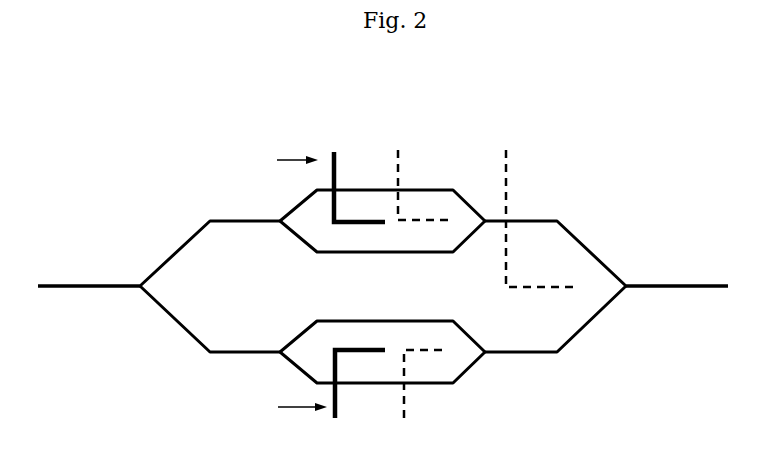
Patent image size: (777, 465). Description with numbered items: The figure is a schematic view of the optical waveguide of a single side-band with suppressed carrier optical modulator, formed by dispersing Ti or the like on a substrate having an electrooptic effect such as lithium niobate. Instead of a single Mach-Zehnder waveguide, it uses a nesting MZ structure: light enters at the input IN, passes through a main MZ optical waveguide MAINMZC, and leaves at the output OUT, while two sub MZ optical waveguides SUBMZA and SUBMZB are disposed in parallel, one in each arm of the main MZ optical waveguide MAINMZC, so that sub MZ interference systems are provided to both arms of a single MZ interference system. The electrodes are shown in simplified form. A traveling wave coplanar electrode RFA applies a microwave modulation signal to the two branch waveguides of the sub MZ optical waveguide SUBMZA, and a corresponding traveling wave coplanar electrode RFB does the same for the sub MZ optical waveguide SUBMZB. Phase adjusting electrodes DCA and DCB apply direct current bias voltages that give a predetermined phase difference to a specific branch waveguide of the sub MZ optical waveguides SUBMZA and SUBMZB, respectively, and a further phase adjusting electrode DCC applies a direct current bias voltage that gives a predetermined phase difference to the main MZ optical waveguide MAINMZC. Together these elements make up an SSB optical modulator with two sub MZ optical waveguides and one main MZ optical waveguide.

The main MZ optical waveguide MAINMZC is at (532, 360).
The sub MZ optical waveguide SUBMZA is at (403, 151).
The sub MZ optical waveguide SUBMZB is at (445, 390).
The traveling wave coplanar electrode RFA is at (295, 173).
The traveling wave coplanar electrode RFB is at (267, 400).
The phase adjusting electrode DCA is at (415, 174).
The phase adjusting electrode DCB is at (417, 400).
The phase adjusting electrode DCC is at (529, 206).
The optical input IN is at (89, 270).
The optical output OUT is at (677, 272).